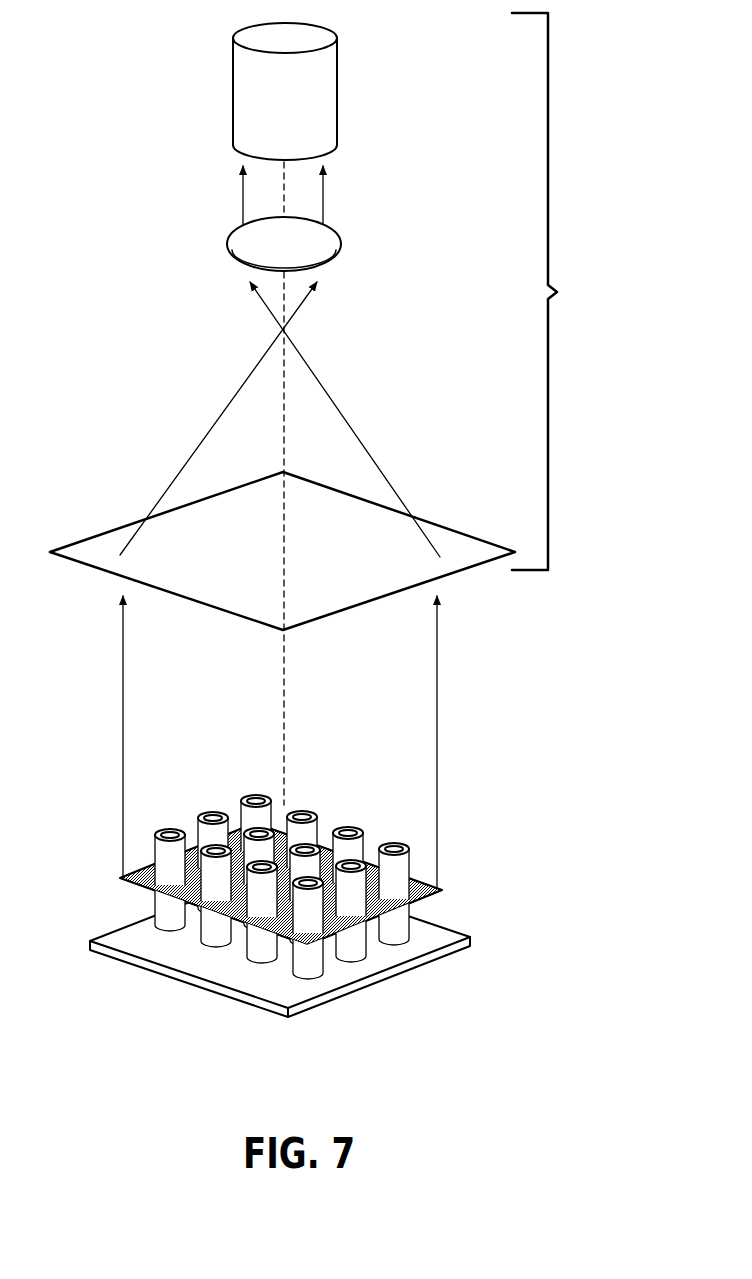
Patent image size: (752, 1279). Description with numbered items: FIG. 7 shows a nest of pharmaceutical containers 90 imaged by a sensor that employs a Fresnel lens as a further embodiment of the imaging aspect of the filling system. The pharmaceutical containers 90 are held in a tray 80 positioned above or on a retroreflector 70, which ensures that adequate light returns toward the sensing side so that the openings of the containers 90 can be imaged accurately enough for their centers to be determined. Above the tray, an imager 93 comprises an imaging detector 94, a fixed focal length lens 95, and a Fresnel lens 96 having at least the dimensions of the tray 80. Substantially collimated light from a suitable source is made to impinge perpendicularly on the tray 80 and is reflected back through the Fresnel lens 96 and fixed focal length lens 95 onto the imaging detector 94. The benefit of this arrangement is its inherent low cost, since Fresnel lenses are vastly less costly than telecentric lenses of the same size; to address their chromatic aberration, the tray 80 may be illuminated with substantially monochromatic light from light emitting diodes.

The imager 93 is at (557, 292).
The imaging detector 94 is at (320, 120).
The fixed focal length lens 95 is at (336, 236).
The Fresnel lens 96 is at (452, 542).
The pharmaceutical containers 90 is at (405, 841).
The tray 80 is at (444, 892).
The retroreflector 70 is at (450, 958).